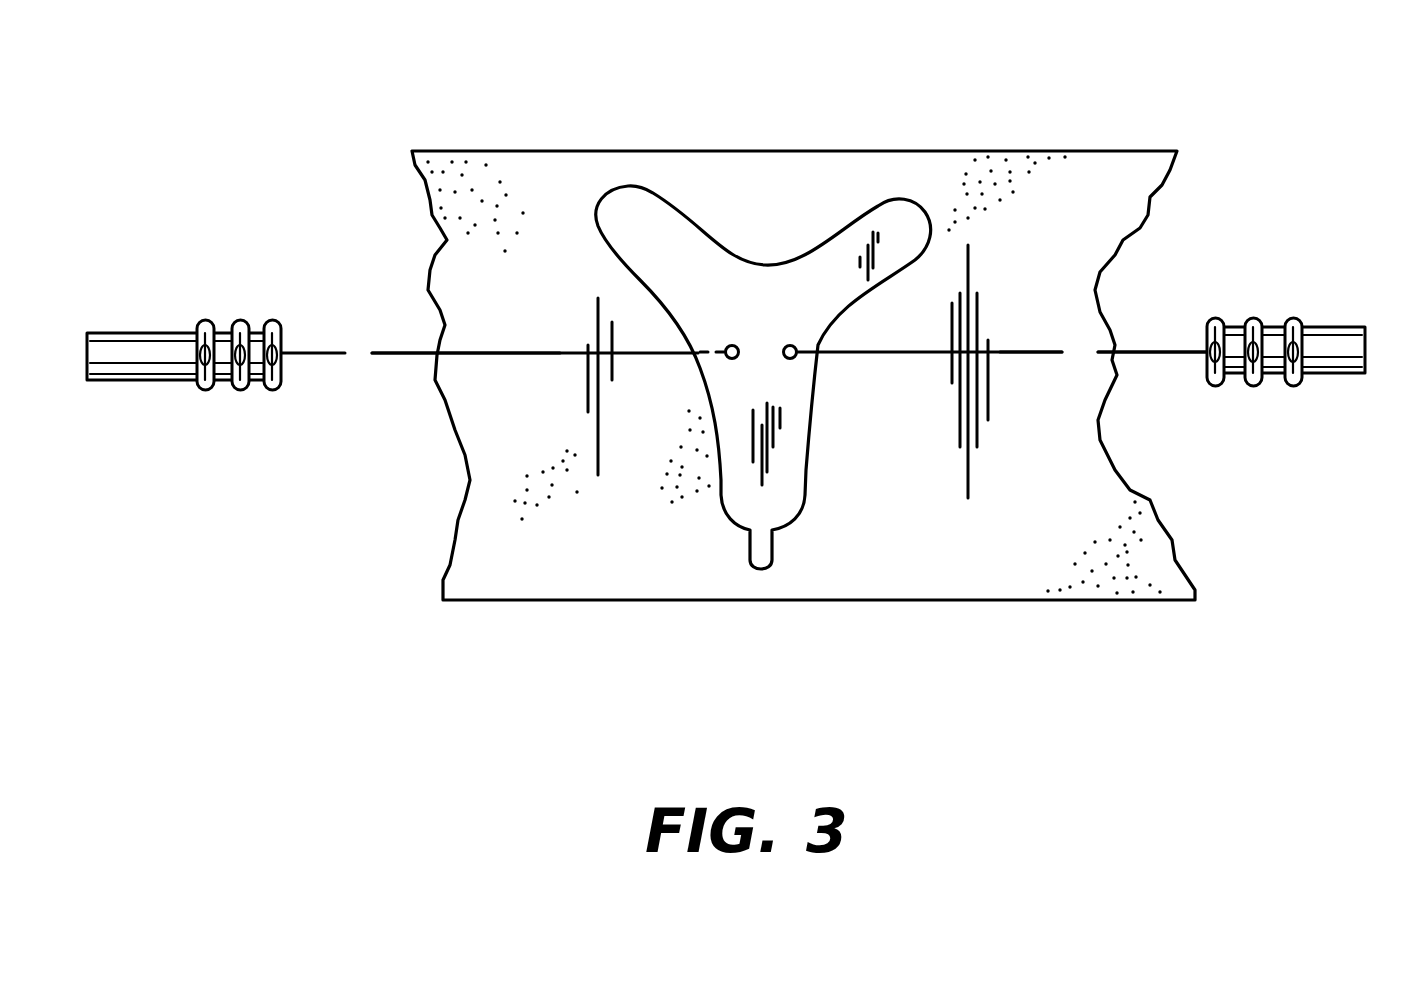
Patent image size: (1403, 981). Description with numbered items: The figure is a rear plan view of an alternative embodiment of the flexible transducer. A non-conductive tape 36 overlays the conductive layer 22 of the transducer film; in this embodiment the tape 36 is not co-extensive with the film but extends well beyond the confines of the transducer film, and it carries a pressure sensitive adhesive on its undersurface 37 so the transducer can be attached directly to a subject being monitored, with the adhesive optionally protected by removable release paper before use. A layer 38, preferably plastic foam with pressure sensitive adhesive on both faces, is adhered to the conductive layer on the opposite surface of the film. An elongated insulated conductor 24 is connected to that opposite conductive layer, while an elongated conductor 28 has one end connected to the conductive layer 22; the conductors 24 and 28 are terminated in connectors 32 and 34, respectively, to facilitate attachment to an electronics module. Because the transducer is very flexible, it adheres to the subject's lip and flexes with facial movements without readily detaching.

The conductive layer 22 is at (745, 357).
The elongated insulated conductor 24 is at (1132, 355).
The elongated conductor 28 is at (418, 354).
The connector 32 is at (1323, 327).
The connector 34 is at (168, 333).
The non-conductive tape 36 is at (894, 485).
The undersurface 37 is at (483, 181).
The layer 38 is at (755, 322).